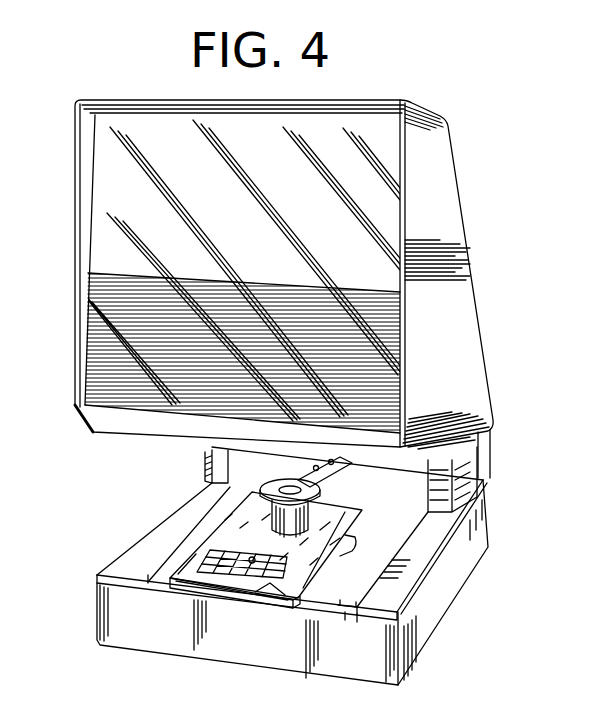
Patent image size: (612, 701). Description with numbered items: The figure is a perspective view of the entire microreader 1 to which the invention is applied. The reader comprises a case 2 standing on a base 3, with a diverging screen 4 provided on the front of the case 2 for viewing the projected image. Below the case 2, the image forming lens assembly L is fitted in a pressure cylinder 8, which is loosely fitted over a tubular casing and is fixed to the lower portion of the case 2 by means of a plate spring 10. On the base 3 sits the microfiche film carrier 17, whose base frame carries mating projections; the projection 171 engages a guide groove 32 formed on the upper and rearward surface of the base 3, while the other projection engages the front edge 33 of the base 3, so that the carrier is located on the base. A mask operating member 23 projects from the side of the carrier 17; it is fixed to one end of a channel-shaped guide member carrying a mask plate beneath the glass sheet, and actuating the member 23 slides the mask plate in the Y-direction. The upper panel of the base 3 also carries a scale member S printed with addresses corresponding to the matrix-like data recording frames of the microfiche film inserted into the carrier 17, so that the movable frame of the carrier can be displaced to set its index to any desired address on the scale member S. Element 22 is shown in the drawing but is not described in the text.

The microreader 1 is at (470, 187).
The case 2 is at (476, 349).
The base 3 is at (456, 578).
The diverging screen 4 is at (118, 356).
The pressure cylinder 8 is at (302, 537).
The plate spring 10 is at (334, 470).
The image forming lens assembly L is at (300, 522).
The scale member S is at (218, 566).
The microfiche film carrier 17 is at (347, 591).
The mating projection 171 is at (271, 603).
The slide holder 22 is at (228, 580).
The mask operating member 23 is at (352, 549).
The guide groove 32 is at (401, 502).
The front edge 33 is at (346, 616).